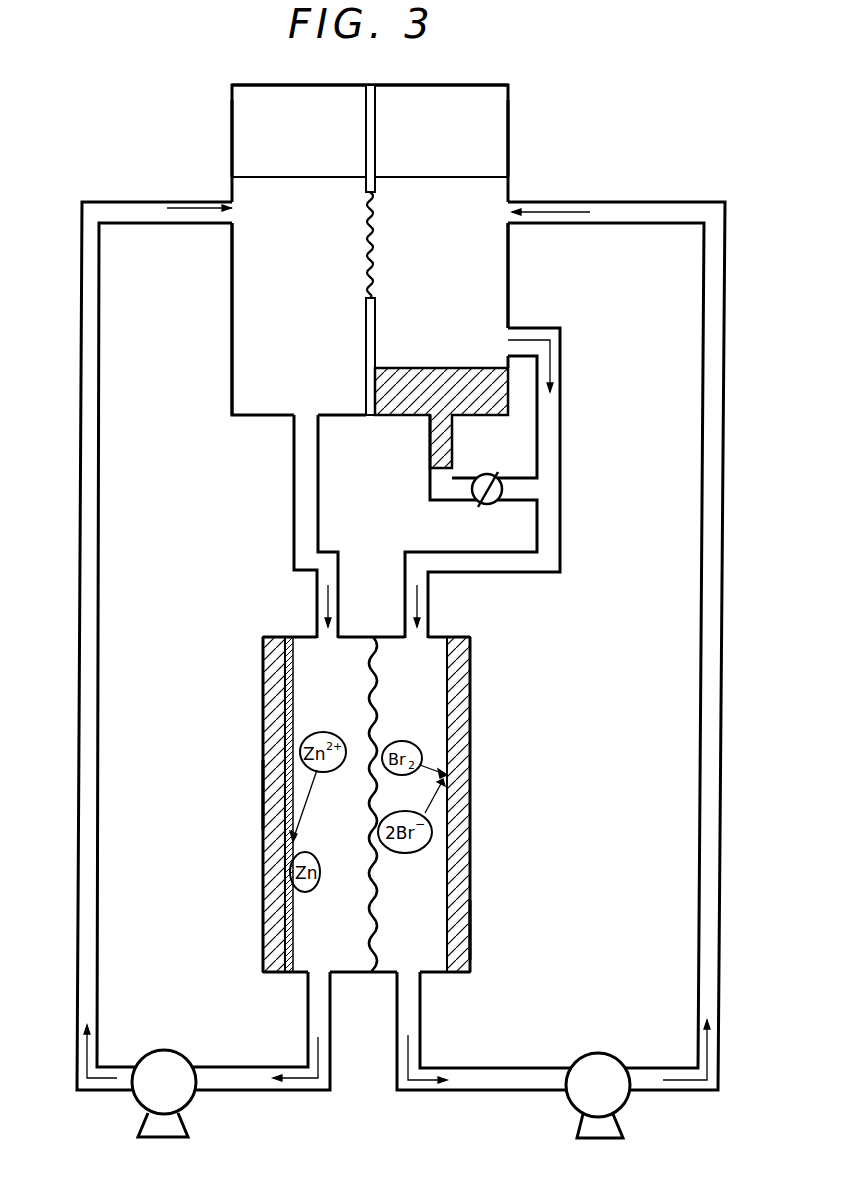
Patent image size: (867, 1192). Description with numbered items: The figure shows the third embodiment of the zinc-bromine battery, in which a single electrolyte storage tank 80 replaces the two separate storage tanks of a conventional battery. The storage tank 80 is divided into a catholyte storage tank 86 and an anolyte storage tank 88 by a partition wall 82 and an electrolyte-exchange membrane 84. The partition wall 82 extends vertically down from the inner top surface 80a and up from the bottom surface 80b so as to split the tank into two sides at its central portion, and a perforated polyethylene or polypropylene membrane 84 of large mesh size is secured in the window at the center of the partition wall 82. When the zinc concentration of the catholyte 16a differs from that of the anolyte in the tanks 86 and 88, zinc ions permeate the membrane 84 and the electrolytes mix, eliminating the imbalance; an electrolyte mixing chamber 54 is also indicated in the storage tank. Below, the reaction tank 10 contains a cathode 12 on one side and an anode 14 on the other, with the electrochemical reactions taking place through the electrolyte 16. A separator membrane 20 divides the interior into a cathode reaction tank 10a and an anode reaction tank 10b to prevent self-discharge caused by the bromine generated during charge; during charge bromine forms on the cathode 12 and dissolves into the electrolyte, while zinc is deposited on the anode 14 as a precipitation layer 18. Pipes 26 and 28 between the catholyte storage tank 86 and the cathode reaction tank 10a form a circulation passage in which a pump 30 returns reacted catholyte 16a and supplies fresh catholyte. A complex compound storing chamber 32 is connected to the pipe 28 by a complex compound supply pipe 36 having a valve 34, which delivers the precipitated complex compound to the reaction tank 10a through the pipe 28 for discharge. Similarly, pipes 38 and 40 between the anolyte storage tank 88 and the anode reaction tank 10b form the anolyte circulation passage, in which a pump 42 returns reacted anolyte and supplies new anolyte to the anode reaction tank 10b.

The reaction tank 10 is at (372, 973).
The cathode reaction tank 10a is at (430, 942).
The anode reaction tank 10b is at (293, 798).
The cathode 12 is at (467, 653).
The anode 14 is at (263, 663).
The electrolyte 16 is at (375, 640).
The catholyte 16a is at (242, 293).
The precipitation layer 18 is at (290, 933).
The separator membrane 20 is at (375, 897).
The pipe 26 is at (720, 955).
The pipe 28 is at (558, 527).
The pump 30 is at (578, 1060).
The complex compound storing chamber 32 is at (473, 402).
The valve 34 is at (490, 474).
The complex compound supply pipe 36 is at (445, 493).
The pipe 38 is at (97, 1010).
The pipe 40 is at (293, 472).
The pump 42 is at (183, 1048).
The electrolyte mixing chamber 54 is at (366, 327).
The electrolyte storage tank 80 is at (508, 103).
The inner top surface 80a is at (242, 85).
The bottom surface 80b is at (333, 413).
The partition wall 82 is at (368, 127).
The electrolyte-exchange membrane 84 is at (373, 237).
The catholyte storage tank 86 is at (493, 157).
The anolyte storage tank 88 is at (236, 126).